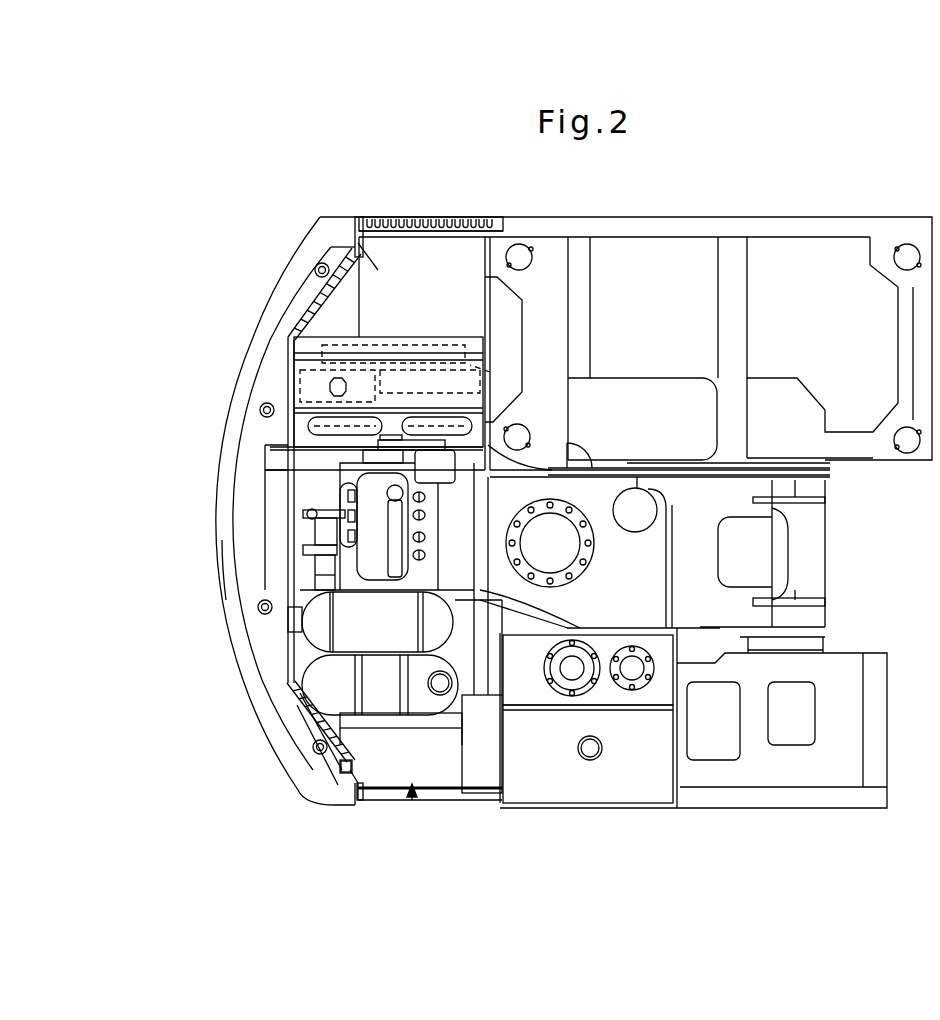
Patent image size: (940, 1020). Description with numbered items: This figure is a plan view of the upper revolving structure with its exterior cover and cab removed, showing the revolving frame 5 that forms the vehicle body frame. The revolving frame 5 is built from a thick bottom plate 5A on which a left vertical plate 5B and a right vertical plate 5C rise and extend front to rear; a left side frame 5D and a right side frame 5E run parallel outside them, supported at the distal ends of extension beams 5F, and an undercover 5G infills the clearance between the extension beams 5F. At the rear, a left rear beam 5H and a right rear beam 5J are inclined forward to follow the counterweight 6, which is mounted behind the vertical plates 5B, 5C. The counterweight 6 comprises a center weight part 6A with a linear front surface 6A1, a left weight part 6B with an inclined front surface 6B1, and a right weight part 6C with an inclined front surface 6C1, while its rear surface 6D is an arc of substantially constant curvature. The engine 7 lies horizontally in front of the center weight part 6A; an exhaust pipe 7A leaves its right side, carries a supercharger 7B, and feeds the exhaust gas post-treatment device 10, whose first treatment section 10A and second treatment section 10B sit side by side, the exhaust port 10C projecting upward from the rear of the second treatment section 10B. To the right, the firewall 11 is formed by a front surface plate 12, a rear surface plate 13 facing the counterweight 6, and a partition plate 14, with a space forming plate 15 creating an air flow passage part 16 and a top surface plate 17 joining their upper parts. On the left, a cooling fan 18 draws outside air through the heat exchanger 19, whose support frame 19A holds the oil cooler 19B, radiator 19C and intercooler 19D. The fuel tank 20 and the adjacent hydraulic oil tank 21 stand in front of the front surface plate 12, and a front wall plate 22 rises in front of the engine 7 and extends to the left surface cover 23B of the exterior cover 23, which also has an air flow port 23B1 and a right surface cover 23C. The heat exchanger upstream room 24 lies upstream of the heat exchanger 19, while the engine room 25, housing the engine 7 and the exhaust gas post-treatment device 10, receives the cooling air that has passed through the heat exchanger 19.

The revolving frame 5 is at (683, 228).
The bottom plate 5A is at (645, 393).
The left vertical plate 5B is at (688, 475).
The right vertical plate 5C is at (702, 628).
The left side frame 5D is at (747, 228).
The right side frame 5E is at (702, 797).
The extension beams 5F is at (557, 304).
The undercover 5G is at (409, 255).
The left rear beam 5H is at (308, 300).
The right rear beam 5J is at (295, 700).
The counterweight 6 is at (232, 470).
The center weight part 6A is at (228, 452).
The front surface 6A1 is at (305, 495).
The left weight part 6B is at (293, 273).
The front surface 6B1 is at (338, 248).
The right weight part 6C is at (300, 745).
The front surface 6C1 is at (335, 775).
The rear surface 6D is at (222, 565).
The engine 7 is at (395, 527).
The exhaust pipe 7A is at (312, 590).
The supercharger 7B is at (303, 540).
The exhaust gas post-treatment device 10 is at (380, 700).
The first treatment section 10A is at (315, 622).
The second treatment section 10B is at (325, 690).
The exhaust port 10C is at (440, 700).
The firewall 11 is at (413, 800).
The front surface plate 12 is at (482, 655).
The rear surface plate 13 is at (310, 708).
The partition plate 14 is at (428, 722).
The space forming plate 15 is at (340, 755).
The air flow passage part 16 is at (294, 798).
The top surface plate 17 is at (478, 760).
The cooling fan 18 is at (325, 428).
The heat exchanger 19 is at (300, 360).
The support frame 19A is at (473, 370).
The oil cooler 19B is at (490, 372).
The radiator 19C is at (310, 380).
The intercooler 19D is at (350, 350).
The fuel tank 20 is at (575, 760).
The hydraulic oil tank 21 is at (605, 690).
The front wall plate 22 is at (483, 590).
The exterior cover 23 is at (489, 215).
The left surface cover 23B is at (447, 215).
The air flow port 23B1 is at (383, 215).
The right surface cover 23C is at (398, 797).
The heat exchanger upstream room 24 is at (352, 243).
The engine room 25 is at (300, 510).